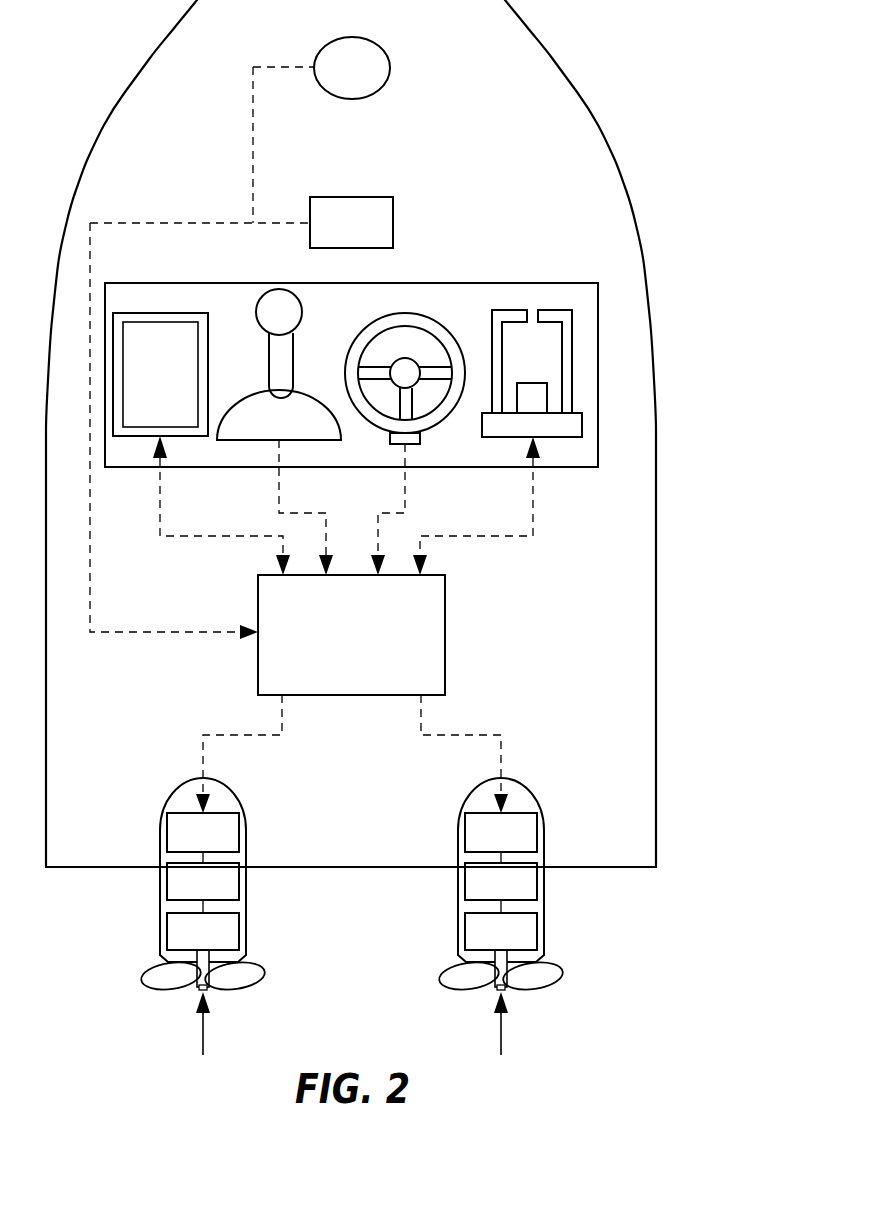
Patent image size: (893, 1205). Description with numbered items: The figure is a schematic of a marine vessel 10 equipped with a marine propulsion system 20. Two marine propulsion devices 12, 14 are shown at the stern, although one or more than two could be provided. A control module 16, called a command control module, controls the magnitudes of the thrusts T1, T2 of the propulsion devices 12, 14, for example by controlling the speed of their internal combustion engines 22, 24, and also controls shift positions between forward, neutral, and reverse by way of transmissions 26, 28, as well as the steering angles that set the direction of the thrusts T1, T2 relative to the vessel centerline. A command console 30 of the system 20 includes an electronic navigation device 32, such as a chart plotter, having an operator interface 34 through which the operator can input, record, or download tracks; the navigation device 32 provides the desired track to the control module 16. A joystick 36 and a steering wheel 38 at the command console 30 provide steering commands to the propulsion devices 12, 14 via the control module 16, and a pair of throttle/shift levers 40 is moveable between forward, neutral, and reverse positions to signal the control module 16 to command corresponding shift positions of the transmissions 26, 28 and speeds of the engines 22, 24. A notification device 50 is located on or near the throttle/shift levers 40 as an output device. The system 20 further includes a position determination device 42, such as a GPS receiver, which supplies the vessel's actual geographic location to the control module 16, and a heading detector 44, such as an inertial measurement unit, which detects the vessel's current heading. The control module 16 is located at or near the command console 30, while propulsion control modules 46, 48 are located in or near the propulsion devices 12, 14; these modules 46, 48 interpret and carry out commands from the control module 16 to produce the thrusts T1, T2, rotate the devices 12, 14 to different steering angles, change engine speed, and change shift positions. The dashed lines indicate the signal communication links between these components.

The marine vessel 10 is at (567, 63).
The marine propulsion device 12 is at (209, 885).
The marine propulsion device 14 is at (501, 885).
The control module 16 is at (445, 642).
The marine propulsion system 20 is at (335, 440).
The internal combustion engine 22 is at (159, 878).
The internal combustion engine 24 is at (544, 878).
The transmission 26 is at (159, 930).
The transmission 28 is at (544, 930).
The command console 30 is at (500, 283).
The electronic navigation device 32 is at (186, 348).
The operator interface 34 is at (208, 383).
The joystick 36 is at (293, 360).
The steering wheel 38 is at (432, 325).
The throttle/shift levers 40 is at (600, 378).
The position determination device 42 is at (380, 45).
The heading detector 44 is at (377, 197).
The propulsion control module 46 is at (159, 838).
The propulsion control module 48 is at (544, 838).
The notification device 50 is at (533, 383).
The thrust T1 is at (203, 1022).
The thrust T2 is at (501, 1022).